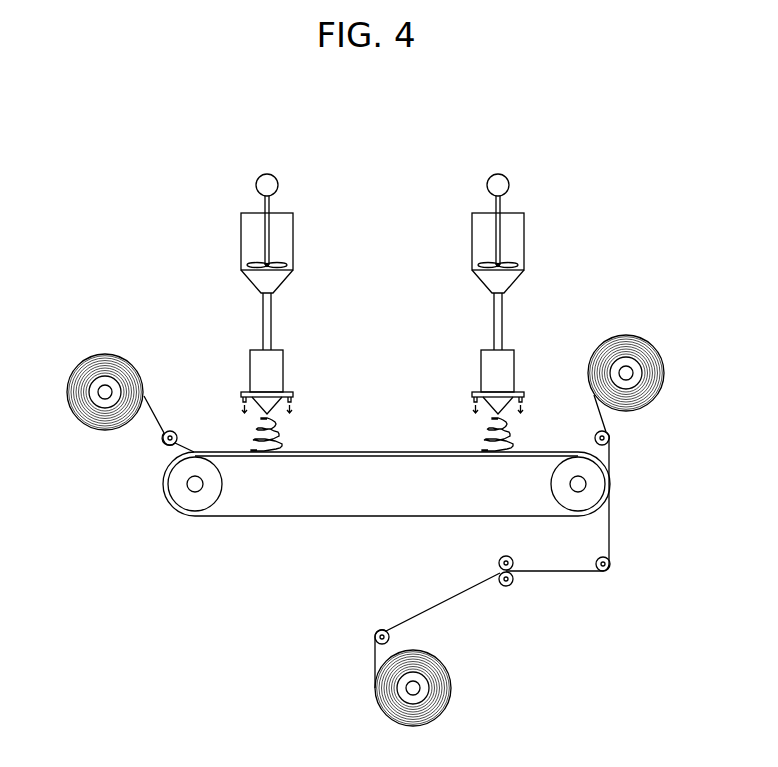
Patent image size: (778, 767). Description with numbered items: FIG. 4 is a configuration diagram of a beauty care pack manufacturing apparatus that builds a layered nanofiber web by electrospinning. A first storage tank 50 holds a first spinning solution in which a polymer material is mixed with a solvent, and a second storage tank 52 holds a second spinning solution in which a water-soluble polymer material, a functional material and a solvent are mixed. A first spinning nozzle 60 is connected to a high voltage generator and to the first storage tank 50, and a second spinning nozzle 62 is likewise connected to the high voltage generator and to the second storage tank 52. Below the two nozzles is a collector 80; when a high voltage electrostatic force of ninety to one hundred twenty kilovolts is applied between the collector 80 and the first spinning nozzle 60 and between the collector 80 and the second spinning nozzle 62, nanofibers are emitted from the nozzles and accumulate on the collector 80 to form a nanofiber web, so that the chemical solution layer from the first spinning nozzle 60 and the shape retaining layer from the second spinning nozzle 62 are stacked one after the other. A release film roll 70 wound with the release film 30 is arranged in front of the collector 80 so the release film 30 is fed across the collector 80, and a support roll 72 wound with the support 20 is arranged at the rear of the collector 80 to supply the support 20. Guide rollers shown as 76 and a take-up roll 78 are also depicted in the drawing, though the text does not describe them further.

The support 20 is at (607, 418).
The release film 30 is at (157, 420).
The first storage tank 50 is at (293, 237).
The second storage tank 52 is at (524, 237).
The first spinning nozzle 60 is at (279, 368).
The second spinning nozzle 62 is at (520, 372).
The release film roll 70 is at (106, 392).
The support roll 72 is at (627, 372).
The pressing rollers 76 is at (512, 584).
The winding roll 78 is at (390, 683).
The collector 80 is at (332, 457).